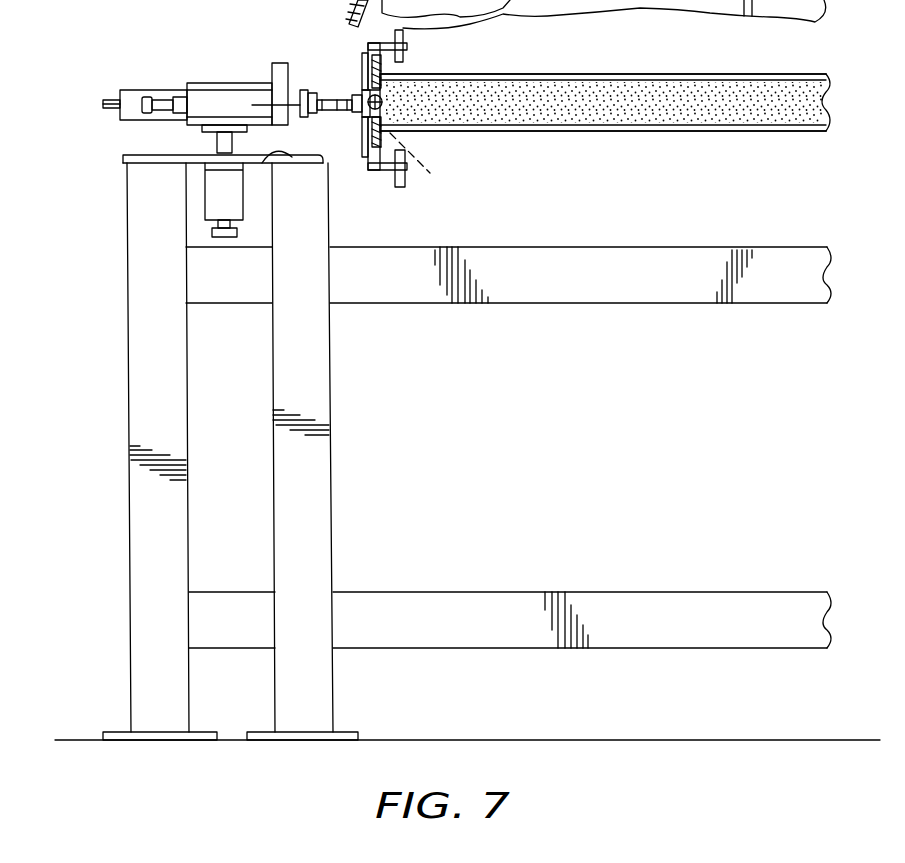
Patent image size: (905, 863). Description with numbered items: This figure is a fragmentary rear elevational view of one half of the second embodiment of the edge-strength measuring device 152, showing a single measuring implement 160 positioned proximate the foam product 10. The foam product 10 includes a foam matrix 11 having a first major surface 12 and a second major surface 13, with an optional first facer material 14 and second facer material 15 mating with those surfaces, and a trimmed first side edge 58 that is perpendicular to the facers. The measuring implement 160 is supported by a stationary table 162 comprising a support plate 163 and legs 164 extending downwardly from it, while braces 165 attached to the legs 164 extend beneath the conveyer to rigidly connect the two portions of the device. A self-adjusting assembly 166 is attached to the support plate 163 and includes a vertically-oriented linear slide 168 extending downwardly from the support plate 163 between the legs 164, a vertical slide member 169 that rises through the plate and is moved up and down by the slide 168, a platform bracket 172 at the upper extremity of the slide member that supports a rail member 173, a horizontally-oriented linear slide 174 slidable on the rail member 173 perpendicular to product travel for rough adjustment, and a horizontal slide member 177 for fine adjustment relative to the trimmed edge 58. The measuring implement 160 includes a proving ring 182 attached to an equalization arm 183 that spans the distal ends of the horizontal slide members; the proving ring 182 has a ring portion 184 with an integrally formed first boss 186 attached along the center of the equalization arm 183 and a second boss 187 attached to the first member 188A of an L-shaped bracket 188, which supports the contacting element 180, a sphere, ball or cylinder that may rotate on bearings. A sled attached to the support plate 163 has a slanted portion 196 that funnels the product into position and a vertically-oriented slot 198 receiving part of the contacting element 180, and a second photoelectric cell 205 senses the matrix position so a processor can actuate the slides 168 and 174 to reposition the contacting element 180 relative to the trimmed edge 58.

The foam product 10 is at (697, 70).
The foam matrix 11 is at (572, 108).
The first major surface 12 is at (607, 128).
The second major surface 13 is at (530, 80).
The first facer material 14 is at (648, 128).
The second facer material 15 is at (600, 75).
The first side edge 58 is at (402, 83).
The edge-strength measuring device 152 is at (107, 88).
The measuring implement 160 is at (322, 75).
The stationary table 162 is at (123, 453).
The support plate 163 is at (262, 163).
The legs 164 is at (142, 565).
The braces 165 is at (547, 292).
The self-adjusting assembly 166 is at (225, 75).
The vertically-oriented linear slide 168 is at (200, 226).
The vertical slide member 169 is at (232, 142).
The platform bracket 172 is at (203, 127).
The rail member 173 is at (104, 106).
The horizontally-oriented linear slide 174 is at (205, 97).
The second horizontal slide member 177 is at (167, 106).
The contacting element 180 is at (383, 103).
The proving ring 182 is at (343, 122).
The equalization arm 183 is at (305, 88).
The ring portion 184 is at (350, 115).
The first boss 186 is at (360, 118).
The second boss 187 is at (322, 118).
The L-shaped bracket 188 is at (353, 80).
The first member 188A is at (373, 170).
The slanted portion 196 is at (410, 3).
The vertically-oriented slot 198 is at (428, 158).
The second photoelectric cell 205 is at (410, 170).